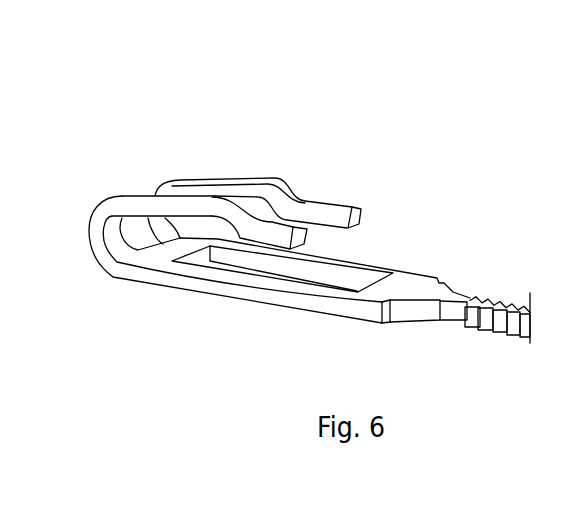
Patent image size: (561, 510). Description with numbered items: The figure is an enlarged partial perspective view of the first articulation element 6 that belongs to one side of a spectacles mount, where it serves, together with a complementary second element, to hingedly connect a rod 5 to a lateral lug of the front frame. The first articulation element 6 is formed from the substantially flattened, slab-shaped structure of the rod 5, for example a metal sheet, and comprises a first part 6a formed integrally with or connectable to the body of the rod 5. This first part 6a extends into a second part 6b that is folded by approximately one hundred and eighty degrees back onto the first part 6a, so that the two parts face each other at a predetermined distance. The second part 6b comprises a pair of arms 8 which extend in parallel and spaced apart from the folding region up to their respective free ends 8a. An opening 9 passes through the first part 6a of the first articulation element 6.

The rod 5 is at (488, 320).
The first articulation element 6 is at (291, 220).
The first part 6a is at (212, 302).
The second part 6b is at (257, 160).
The arms 8 is at (240, 205).
The free ends 8a is at (362, 209).
The opening 9 is at (303, 278).